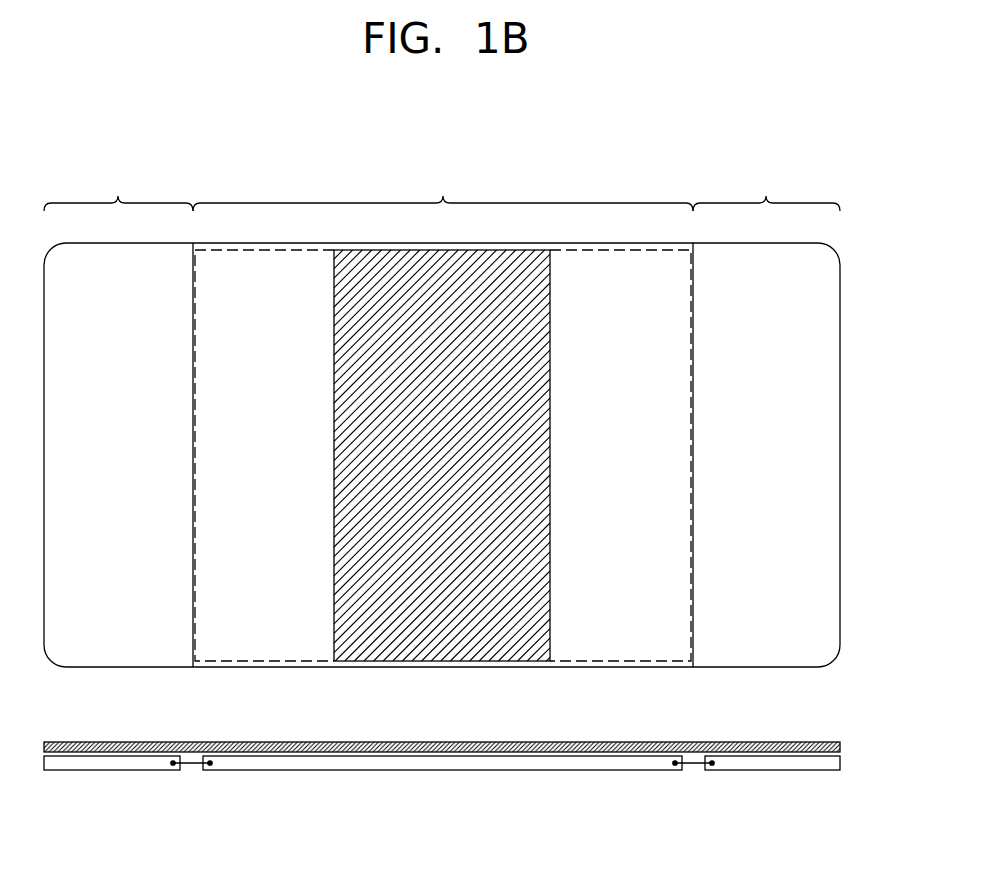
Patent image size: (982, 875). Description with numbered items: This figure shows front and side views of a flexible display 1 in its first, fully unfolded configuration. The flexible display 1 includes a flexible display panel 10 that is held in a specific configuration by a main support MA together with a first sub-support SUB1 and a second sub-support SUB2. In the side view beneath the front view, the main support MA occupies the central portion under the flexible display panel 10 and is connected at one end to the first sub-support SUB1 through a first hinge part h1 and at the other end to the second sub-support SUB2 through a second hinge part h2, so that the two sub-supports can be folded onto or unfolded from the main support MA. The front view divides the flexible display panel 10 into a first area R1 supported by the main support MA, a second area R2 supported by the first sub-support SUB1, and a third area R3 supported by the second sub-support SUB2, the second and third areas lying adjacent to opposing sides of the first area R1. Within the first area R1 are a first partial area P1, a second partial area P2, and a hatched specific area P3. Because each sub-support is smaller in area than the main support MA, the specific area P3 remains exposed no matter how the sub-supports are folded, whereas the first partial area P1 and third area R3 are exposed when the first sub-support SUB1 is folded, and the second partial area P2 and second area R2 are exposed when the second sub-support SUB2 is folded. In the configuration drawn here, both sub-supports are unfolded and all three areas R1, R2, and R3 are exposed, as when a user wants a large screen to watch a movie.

The flexible display 1 is at (654, 155).
The flexible display panel 10 is at (780, 651).
The first area R1 is at (443, 193).
The second area R2 is at (118, 193).
The third area R3 is at (766, 193).
The first partial area P1 is at (625, 653).
The second partial area P2 is at (262, 653).
The specific area P3 is at (436, 653).
The first sub-support SUB1 is at (124, 771).
The second sub-support SUB2 is at (760, 771).
The main support MA is at (446, 771).
The first hinge part h1 is at (193, 771).
The second hinge part h2 is at (693, 771).